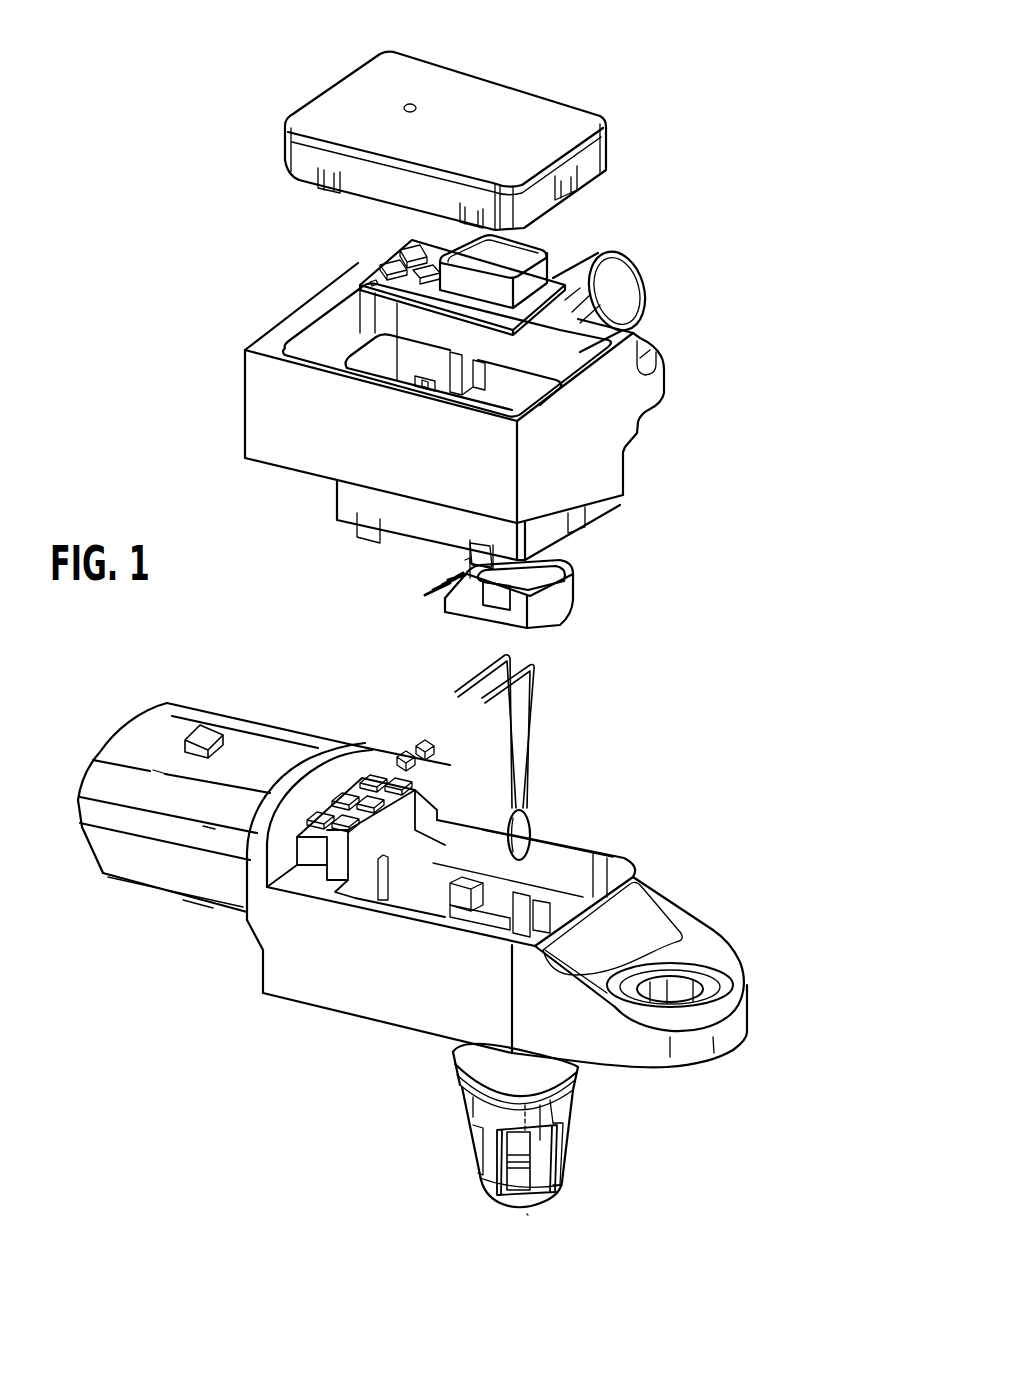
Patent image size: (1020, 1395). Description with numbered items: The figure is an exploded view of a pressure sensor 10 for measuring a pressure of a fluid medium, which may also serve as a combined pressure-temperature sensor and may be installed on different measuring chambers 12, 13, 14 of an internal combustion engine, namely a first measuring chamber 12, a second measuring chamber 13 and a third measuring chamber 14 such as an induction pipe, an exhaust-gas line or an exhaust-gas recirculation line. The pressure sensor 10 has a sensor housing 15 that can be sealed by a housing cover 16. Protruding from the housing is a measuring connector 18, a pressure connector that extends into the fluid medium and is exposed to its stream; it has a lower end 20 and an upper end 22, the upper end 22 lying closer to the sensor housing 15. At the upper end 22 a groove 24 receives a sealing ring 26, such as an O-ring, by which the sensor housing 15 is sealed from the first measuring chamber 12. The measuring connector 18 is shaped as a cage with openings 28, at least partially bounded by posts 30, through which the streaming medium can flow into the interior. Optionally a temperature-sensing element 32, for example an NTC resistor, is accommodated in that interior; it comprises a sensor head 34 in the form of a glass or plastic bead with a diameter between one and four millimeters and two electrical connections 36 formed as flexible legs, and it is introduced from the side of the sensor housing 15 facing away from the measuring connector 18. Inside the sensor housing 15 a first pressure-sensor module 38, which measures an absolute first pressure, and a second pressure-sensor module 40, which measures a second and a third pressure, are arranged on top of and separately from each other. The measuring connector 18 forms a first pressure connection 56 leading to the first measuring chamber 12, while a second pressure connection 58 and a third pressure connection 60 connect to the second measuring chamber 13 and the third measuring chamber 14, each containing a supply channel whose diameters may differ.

The pressure sensor 10 is at (753, 79).
The first measuring chamber 12 is at (516, 1277).
The second measuring chamber 13 is at (710, 341).
The third measuring chamber 14 is at (692, 244).
The sensor housing 15 is at (403, 572).
The housing cover 16 is at (477, 103).
The measuring connector 18 is at (578, 1133).
The lower end 20 is at (517, 1202).
The upper end 22 is at (540, 1107).
The groove 24 is at (552, 1086).
The sealing ring 26 is at (477, 1063).
The openings 28 is at (530, 1175).
The posts 30 is at (527, 1163).
The temperature-sensing element 32 is at (558, 749).
The sensor head 34 is at (522, 833).
The electrical connections 36 is at (537, 690).
The first pressure-sensor module 38 is at (589, 597).
The second pressure-sensor module 40 is at (549, 238).
The first pressure connection 56 is at (527, 1213).
The second pressure connection 58 is at (653, 382).
The third pressure connection 60 is at (630, 288).